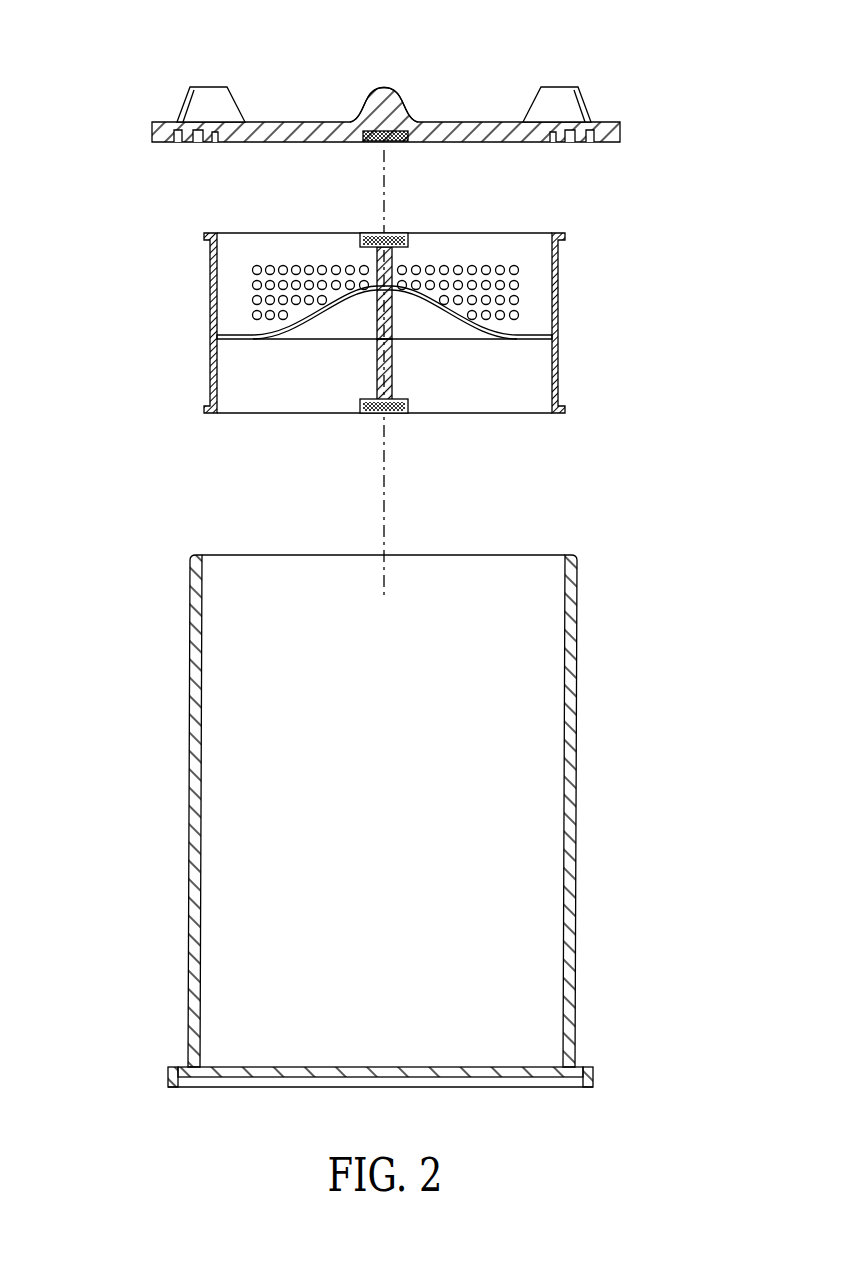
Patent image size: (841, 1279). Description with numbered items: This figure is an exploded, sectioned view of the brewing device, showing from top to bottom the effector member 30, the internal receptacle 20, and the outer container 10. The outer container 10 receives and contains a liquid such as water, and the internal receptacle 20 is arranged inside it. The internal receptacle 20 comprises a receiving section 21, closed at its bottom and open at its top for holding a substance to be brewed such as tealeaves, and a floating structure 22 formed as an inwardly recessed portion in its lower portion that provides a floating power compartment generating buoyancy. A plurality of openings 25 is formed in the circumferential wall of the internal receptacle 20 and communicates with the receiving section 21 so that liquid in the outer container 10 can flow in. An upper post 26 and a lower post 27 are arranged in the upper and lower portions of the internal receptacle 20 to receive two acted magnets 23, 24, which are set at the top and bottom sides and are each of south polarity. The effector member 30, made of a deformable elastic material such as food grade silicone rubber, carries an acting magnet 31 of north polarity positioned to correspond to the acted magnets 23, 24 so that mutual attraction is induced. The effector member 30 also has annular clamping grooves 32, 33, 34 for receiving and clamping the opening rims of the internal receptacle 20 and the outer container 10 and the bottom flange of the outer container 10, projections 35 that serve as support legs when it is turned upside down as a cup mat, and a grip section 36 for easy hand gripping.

The outer container 10 is at (576, 790).
The internal receptacle 20 is at (442, 335).
The receiving section 21 is at (540, 278).
The floating structure 22 is at (490, 348).
The acted magnet 23 is at (396, 233).
The acted magnet 24 is at (393, 415).
The openings 25 is at (512, 268).
The upper post 26 is at (395, 258).
The lower post 27 is at (393, 380).
The effector member 30 is at (362, 128).
The acting magnet 31 is at (398, 143).
The annular clamping groove 32 is at (215, 143).
The annular clamping groove 33 is at (198, 143).
The annular clamping groove 34 is at (178, 143).
The projections 35 is at (588, 100).
The grip section 36 is at (388, 86).